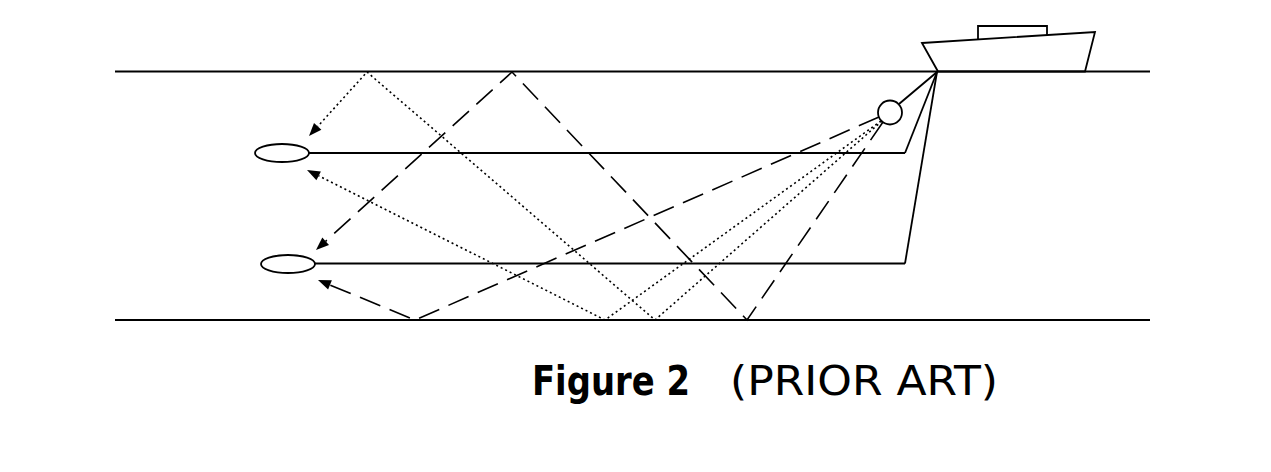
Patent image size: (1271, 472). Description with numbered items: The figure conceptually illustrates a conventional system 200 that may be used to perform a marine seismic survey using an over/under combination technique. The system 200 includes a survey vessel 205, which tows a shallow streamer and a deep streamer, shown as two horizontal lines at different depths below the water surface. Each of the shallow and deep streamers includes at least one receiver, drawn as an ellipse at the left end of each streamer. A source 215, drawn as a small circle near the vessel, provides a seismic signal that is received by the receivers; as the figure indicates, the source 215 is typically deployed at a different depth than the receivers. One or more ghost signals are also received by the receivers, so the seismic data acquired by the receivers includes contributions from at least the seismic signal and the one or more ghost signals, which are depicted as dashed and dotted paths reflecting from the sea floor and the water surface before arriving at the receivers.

The system 200 is at (1187, 112).
The survey vessel 205 is at (921, 52).
The source 215 is at (903, 113).